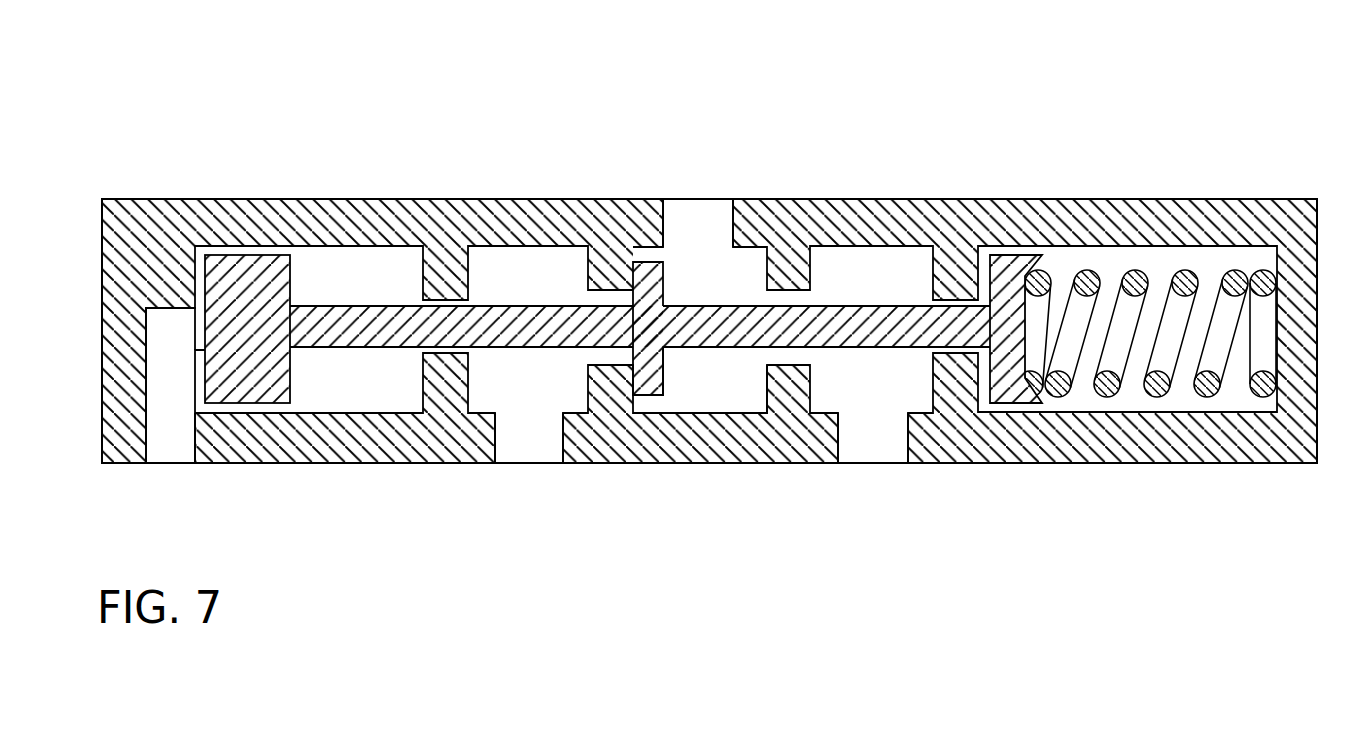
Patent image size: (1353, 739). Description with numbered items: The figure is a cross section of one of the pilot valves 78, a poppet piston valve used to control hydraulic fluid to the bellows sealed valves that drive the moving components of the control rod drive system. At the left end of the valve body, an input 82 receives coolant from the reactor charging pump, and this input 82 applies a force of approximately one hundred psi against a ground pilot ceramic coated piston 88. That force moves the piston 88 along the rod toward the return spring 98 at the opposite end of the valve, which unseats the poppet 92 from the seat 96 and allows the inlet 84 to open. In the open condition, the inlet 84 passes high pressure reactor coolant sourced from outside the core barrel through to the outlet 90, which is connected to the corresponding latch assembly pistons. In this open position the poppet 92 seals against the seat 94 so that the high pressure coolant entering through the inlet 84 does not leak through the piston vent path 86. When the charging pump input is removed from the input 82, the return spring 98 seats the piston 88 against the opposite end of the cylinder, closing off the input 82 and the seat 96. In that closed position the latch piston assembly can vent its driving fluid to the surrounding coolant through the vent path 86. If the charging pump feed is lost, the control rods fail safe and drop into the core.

The pilot valve 78 is at (1240, 180).
The input 82 is at (172, 473).
The inlet 84 is at (533, 475).
The piston vent path 86 is at (877, 472).
The piston 88 is at (240, 257).
The outlet 90 is at (710, 217).
The poppet 92 is at (667, 287).
The seat 94 is at (765, 385).
The seat 96 is at (633, 253).
The return spring 98 is at (1143, 270).